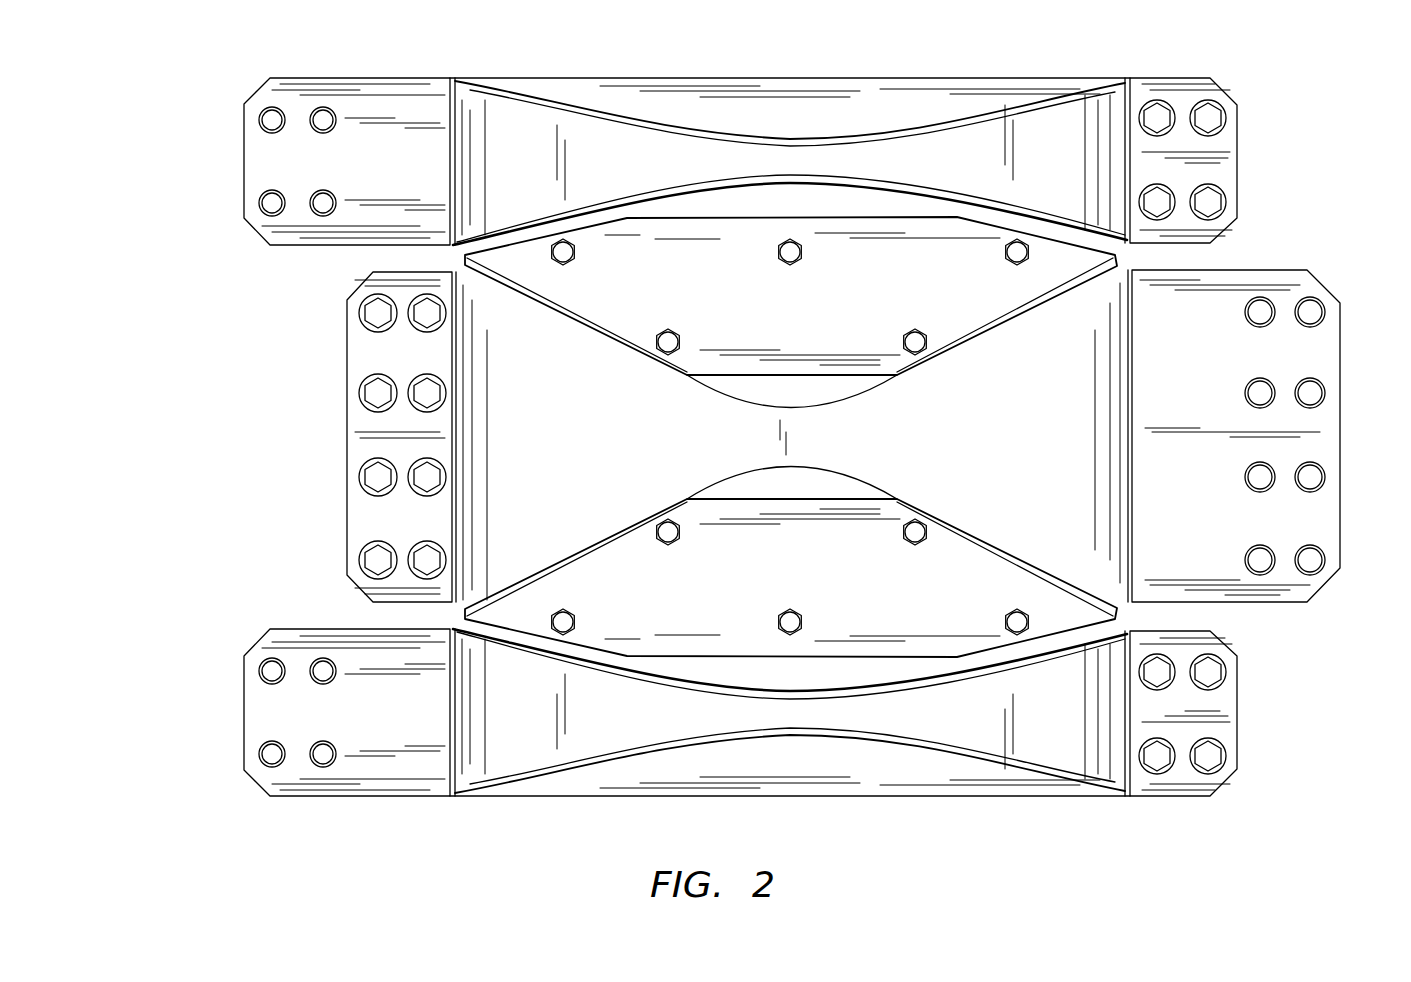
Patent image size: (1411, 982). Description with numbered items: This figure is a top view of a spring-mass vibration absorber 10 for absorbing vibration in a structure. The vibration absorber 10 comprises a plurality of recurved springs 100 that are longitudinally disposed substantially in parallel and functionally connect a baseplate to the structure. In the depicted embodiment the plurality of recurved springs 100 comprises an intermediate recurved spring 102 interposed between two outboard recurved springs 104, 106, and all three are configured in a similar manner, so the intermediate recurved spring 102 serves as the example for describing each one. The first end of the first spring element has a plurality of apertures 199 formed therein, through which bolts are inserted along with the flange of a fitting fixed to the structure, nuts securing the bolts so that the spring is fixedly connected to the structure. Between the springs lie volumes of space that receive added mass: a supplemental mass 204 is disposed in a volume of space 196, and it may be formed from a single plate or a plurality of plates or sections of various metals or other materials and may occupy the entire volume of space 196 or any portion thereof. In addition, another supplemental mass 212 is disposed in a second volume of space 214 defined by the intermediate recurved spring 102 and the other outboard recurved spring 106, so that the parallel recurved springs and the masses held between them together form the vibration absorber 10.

The spring-mass vibration absorber 10 is at (1296, 163).
The plurality of recurved springs 100 is at (237, 287).
The intermediate recurved spring 102 is at (347, 438).
The outboard recurved spring 104 is at (322, 628).
The outboard recurved spring 106 is at (312, 248).
The volume of space 196 is at (748, 677).
The apertures 199 is at (1321, 383).
The supplemental mass 204 is at (1062, 610).
The supplemental mass 212 is at (730, 265).
The second volume of space 214 is at (828, 200).